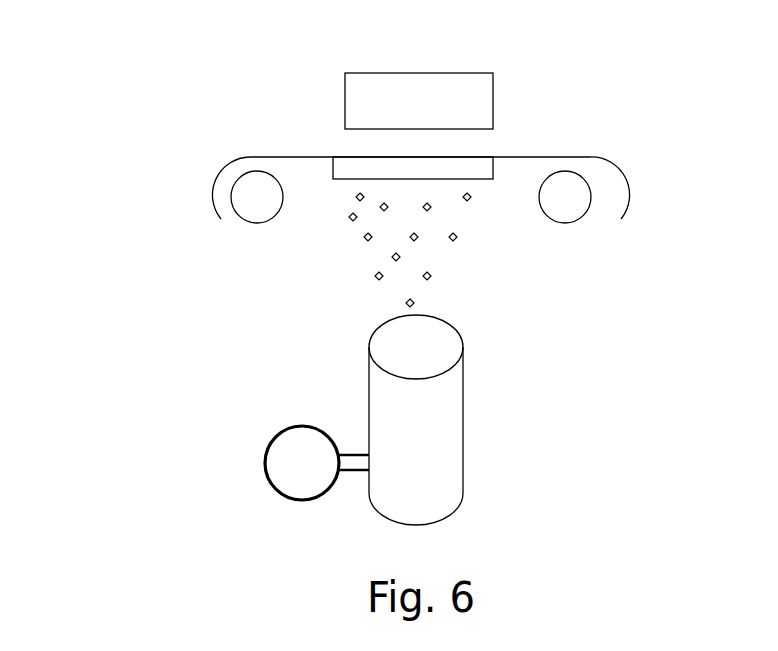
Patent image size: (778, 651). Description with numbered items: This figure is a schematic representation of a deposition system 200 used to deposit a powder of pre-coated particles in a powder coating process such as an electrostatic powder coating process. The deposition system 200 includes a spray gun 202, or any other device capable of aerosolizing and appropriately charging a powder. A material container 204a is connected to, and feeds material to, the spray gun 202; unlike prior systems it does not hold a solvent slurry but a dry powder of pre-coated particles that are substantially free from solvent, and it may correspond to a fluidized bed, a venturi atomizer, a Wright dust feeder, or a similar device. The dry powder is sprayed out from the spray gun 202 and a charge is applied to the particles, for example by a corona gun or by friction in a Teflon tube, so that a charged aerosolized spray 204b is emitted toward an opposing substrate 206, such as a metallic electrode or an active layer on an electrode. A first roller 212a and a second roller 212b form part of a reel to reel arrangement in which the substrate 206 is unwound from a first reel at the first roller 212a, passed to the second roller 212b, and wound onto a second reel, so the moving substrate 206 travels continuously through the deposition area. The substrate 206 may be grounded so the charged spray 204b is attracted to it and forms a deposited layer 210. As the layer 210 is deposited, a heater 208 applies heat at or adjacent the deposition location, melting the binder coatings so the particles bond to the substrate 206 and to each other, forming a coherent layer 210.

The deposition system 200 is at (138, 84).
The spray gun 202 is at (424, 446).
The material container 204a is at (317, 463).
The charged aerosolized spray 204b is at (356, 268).
The substrate 206 is at (227, 177).
The heater 208 is at (365, 105).
The deposited layer 210 is at (472, 177).
The first roller 212a is at (245, 207).
The second roller 212b is at (572, 200).